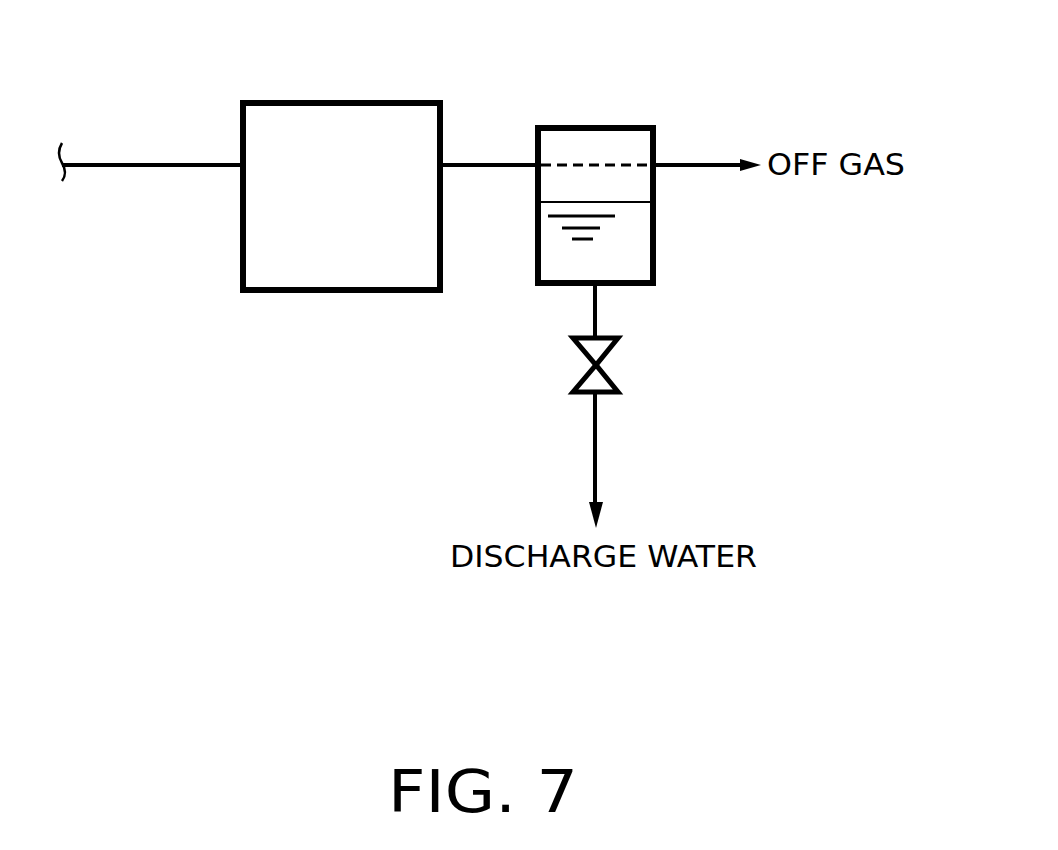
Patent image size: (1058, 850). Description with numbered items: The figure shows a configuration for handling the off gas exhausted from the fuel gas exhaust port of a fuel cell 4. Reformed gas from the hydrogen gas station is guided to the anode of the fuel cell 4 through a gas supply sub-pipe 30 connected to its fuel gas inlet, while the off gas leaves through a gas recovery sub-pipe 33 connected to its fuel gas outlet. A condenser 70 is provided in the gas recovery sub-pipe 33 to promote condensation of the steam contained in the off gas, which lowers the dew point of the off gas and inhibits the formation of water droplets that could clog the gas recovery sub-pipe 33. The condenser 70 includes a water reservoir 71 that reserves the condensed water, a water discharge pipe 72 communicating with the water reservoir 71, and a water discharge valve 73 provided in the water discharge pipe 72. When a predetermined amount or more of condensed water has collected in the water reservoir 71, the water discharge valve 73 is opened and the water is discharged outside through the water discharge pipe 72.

The gas supply sub-pipe 30 is at (142, 163).
The fuel cell 4 is at (337, 103).
The gas recovery sub-pipe 33 is at (492, 163).
The condenser 70 is at (600, 128).
The water reservoir 71 is at (637, 253).
The water discharge pipe 72 is at (595, 310).
The water discharge valve 73 is at (610, 350).